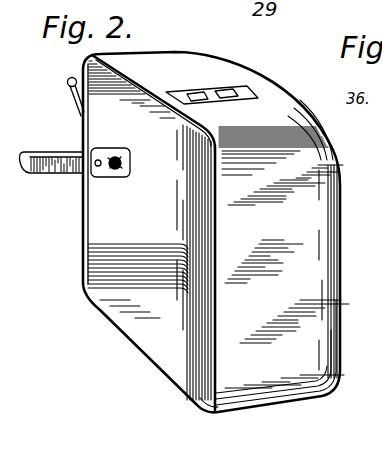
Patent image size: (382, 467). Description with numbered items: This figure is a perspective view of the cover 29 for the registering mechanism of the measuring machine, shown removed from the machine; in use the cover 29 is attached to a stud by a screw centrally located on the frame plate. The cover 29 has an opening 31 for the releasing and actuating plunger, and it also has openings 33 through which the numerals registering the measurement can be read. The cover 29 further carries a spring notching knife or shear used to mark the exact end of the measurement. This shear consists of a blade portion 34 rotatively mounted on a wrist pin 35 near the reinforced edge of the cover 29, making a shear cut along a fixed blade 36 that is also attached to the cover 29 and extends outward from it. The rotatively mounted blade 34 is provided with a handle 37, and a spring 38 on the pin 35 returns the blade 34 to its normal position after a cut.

The cover 29 is at (82, 253).
The opening 31 is at (243, 119).
The openings for the numerals 33 is at (225, 92).
The blade portion 34 is at (76, 100).
The wrist pin 35 is at (119, 171).
The fixed blade 36 is at (60, 183).
The handle 37 is at (67, 81).
The spring 38 is at (109, 149).